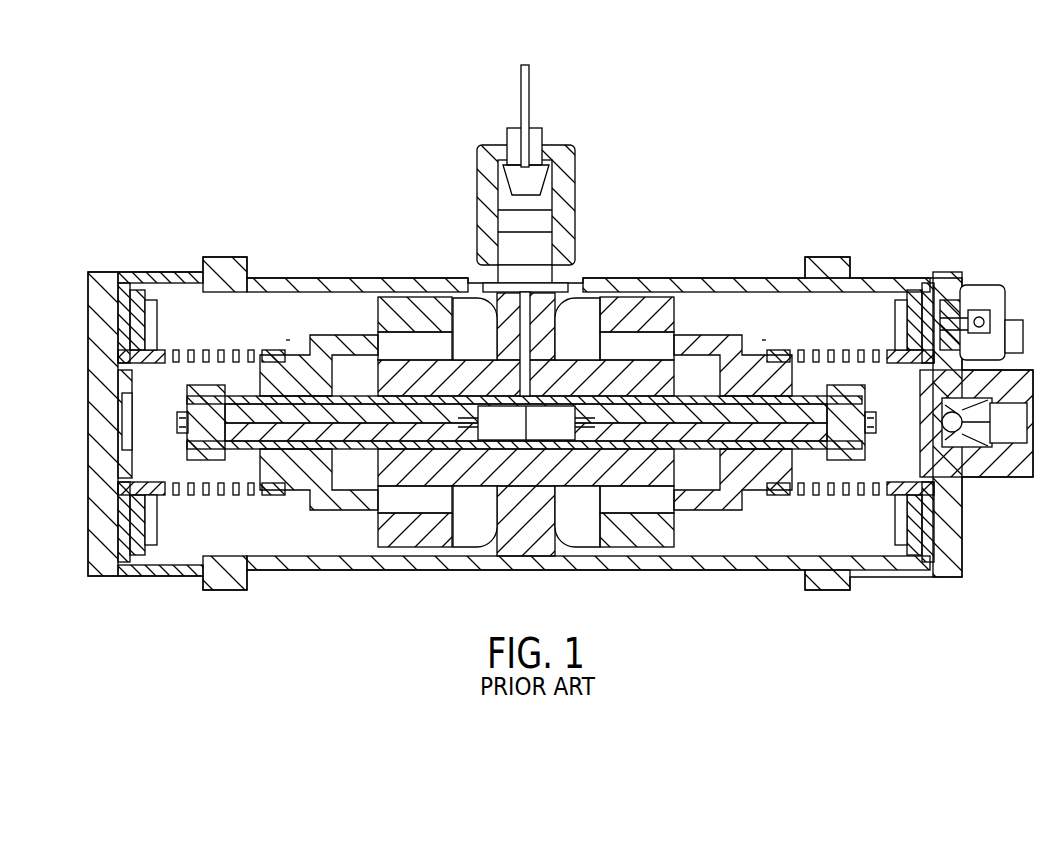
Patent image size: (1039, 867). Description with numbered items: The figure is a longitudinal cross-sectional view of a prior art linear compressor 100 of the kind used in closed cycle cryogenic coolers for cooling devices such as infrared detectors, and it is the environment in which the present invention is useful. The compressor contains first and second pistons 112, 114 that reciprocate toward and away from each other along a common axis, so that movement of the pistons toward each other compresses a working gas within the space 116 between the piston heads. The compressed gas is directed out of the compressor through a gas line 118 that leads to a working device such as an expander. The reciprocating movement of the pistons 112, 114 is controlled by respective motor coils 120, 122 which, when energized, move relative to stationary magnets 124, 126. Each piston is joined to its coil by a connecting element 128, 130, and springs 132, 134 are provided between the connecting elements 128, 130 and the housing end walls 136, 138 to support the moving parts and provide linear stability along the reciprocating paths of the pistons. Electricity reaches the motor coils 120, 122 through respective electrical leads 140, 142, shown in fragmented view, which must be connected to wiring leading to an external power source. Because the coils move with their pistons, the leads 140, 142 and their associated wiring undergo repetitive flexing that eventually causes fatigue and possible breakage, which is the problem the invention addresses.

The linear compressor 100 is at (535, 339).
The first piston 112 is at (447, 425).
The second piston 114 is at (680, 430).
The space 116 is at (540, 430).
The gas line 118 is at (529, 90).
The motor coil 120 is at (396, 330).
The motor coil 122 is at (665, 345).
The stationary magnet 124 is at (410, 345).
The stationary magnet 126 is at (618, 310).
The connecting element 128 is at (332, 500).
The connecting element 130 is at (727, 487).
The spring 132 is at (207, 497).
The spring 134 is at (843, 497).
The housing end wall 136 is at (96, 437).
The housing end wall 138 is at (948, 496).
The electrical lead 140 is at (285, 339).
The electrical lead 142 is at (768, 333).